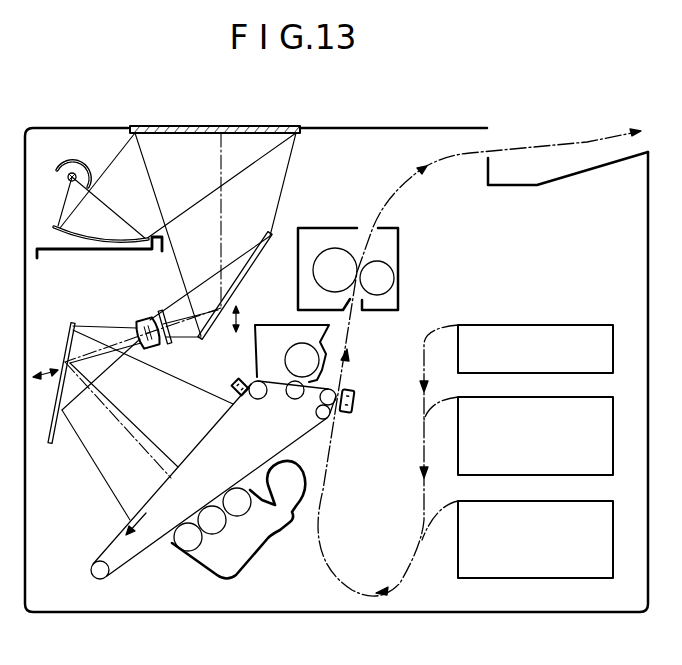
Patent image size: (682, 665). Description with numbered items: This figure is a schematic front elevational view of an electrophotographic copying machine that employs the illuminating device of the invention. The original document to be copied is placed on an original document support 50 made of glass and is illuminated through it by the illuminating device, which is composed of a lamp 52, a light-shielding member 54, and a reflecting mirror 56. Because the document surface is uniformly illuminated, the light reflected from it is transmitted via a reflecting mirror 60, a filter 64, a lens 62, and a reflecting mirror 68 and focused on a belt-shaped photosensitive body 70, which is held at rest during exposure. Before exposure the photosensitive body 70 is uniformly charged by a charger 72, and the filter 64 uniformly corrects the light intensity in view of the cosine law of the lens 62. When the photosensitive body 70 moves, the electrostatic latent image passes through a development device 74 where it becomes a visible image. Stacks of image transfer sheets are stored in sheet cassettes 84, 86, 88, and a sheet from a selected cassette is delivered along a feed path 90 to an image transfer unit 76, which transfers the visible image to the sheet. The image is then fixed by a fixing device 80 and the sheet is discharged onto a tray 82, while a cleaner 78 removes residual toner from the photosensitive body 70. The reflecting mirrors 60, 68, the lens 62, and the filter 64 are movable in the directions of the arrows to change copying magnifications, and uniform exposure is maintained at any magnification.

The original document support 50 is at (266, 125).
The lamp 52 is at (67, 182).
The light-shielding member 54 is at (87, 167).
The reflecting mirror 56 is at (107, 237).
The reflecting mirror 60 is at (250, 269).
The lens 62 is at (141, 321).
The filter 64 is at (161, 311).
The reflecting mirror 68 is at (70, 334).
The belt-shaped photosensitive body 70 is at (211, 432).
The charger 72 is at (236, 382).
The development device 74 is at (266, 548).
The image transfer unit 76 is at (355, 405).
The cleaner 78 is at (280, 325).
The fixing device 80 is at (400, 262).
The tray 82 is at (518, 188).
The sheet cassette 84 is at (535, 349).
The sheet cassette 86 is at (535, 436).
The sheet cassette 88 is at (535, 539).
The feed path 90 is at (333, 523).